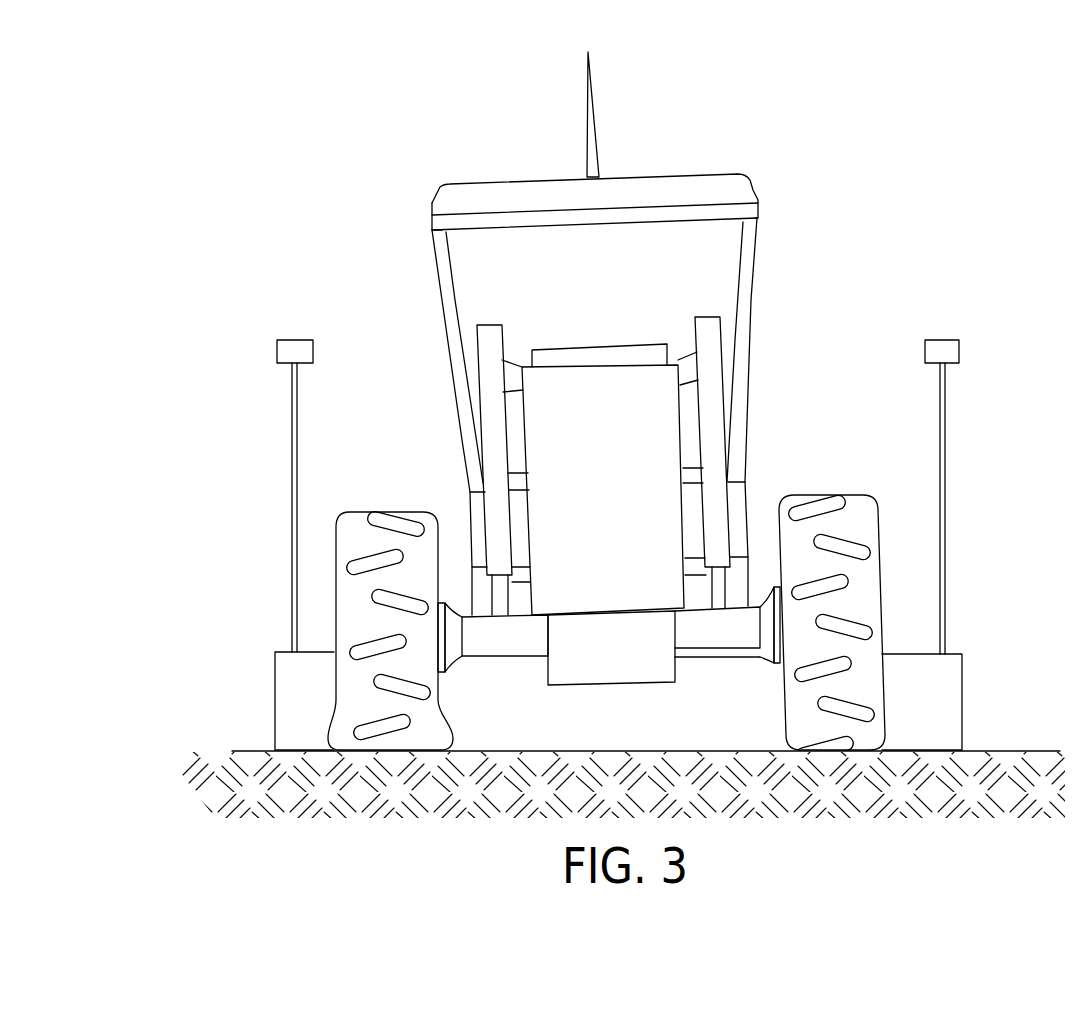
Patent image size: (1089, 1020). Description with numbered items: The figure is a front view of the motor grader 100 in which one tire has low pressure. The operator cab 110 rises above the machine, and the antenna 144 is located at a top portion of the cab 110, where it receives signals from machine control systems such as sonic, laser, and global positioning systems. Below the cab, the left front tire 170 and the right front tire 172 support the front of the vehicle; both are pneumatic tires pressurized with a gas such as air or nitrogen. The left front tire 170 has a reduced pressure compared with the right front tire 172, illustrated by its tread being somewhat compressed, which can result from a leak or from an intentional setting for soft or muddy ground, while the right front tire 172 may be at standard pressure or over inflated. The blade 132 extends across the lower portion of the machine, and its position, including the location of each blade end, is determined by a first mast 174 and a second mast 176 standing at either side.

The motor grader 100 is at (984, 148).
The operator cab 110 is at (707, 148).
The antenna 144 is at (587, 128).
The blade 132 is at (950, 678).
The left front tire 170 is at (442, 706).
The right front tire 172 is at (786, 719).
The first mast 174 is at (292, 407).
The second mast 176 is at (945, 432).